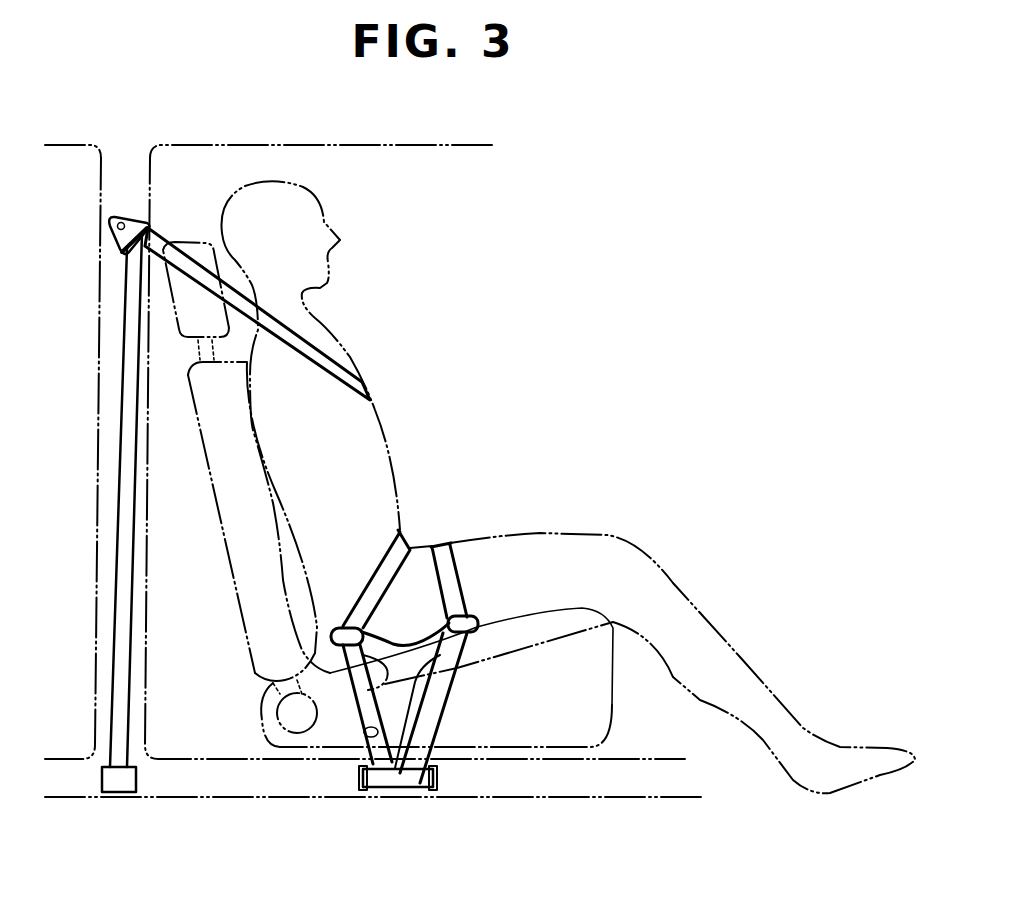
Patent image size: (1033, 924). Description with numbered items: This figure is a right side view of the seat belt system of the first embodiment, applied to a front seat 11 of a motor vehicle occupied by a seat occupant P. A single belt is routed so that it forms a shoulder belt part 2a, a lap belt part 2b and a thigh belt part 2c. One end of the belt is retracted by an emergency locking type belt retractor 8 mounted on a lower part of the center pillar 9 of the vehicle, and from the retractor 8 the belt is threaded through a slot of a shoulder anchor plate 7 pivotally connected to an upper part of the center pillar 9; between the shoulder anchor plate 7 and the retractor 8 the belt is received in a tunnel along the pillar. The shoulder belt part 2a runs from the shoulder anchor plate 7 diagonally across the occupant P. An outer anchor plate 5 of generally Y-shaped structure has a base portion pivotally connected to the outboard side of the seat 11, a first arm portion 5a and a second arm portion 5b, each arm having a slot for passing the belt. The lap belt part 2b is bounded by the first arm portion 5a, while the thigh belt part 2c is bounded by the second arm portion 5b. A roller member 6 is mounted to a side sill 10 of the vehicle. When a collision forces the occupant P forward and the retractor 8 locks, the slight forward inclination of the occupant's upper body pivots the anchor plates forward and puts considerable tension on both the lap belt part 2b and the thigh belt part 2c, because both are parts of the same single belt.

The shoulder belt part 2a is at (363, 380).
The lap belt part 2b is at (400, 530).
The thigh belt part 2c is at (443, 545).
The outer anchor plate 5 is at (395, 645).
The first arm portion 5a is at (340, 625).
The second arm portion 5b is at (477, 622).
The roller member 6 is at (415, 788).
The shoulder anchor plate 7 is at (128, 220).
The belt retractor 8 is at (113, 792).
The center pillar 9 is at (102, 610).
The side sill 10 is at (257, 792).
The front seat 11 is at (605, 703).
The seat occupant P is at (323, 327).